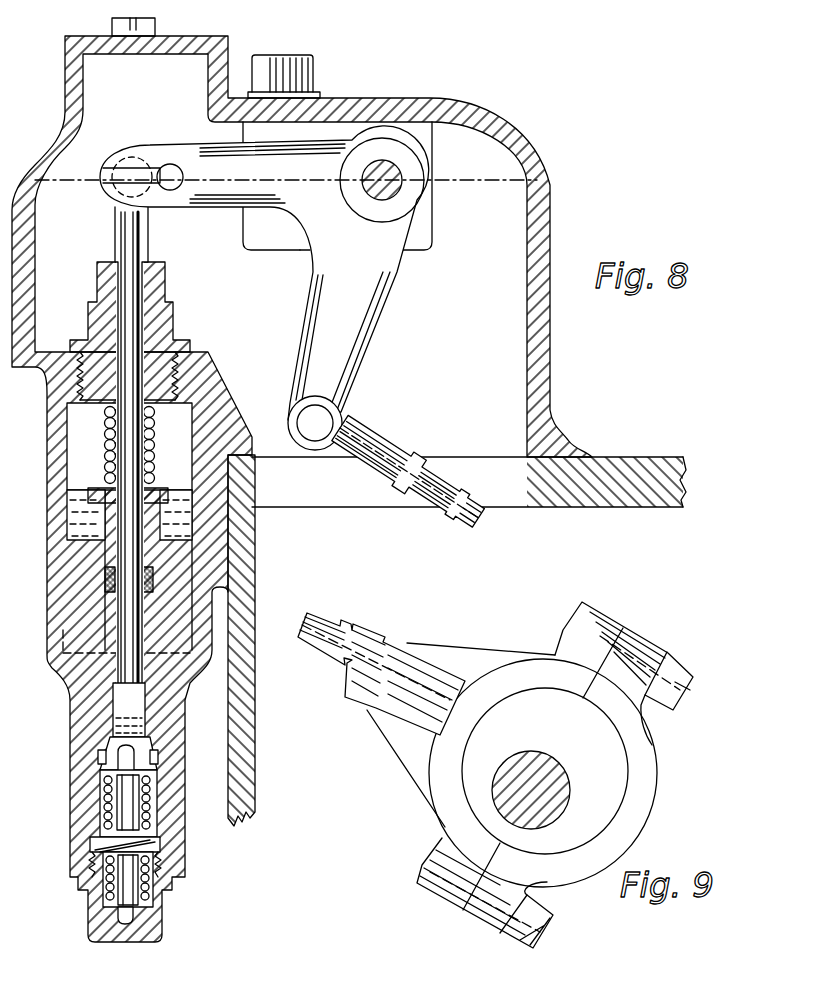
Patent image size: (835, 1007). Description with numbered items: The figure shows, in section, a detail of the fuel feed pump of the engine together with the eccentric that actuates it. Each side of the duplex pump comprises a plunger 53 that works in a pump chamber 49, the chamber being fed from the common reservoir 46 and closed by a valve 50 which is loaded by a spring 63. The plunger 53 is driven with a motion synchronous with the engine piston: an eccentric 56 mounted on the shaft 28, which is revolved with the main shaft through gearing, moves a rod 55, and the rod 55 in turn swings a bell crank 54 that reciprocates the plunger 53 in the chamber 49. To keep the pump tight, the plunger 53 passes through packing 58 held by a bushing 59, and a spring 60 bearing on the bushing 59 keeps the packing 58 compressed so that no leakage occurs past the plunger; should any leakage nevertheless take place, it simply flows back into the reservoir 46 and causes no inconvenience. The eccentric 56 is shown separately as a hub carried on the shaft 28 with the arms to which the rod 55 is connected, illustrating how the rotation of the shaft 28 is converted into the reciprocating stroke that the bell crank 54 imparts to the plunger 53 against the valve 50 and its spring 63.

In FIG. 9, the shaft 28 is at (508, 805).
In FIG. 8, the reservoir 46 is at (151, 439).
In FIG. 8, the pump chamber 49 is at (118, 722).
In FIG. 8, the valve 50 is at (107, 750).
In FIG. 8, the plunger 53 is at (130, 613).
In FIG. 8, the bell crank 54 is at (342, 320).
In FIG. 8, the rod 55 is at (460, 518).
In FIG. 9, the rod 55 is at (320, 633).
In FIG. 9, the eccentric 56 is at (519, 727).
In FIG. 8, the packing 58 is at (107, 587).
In FIG. 8, the bushing 59 is at (113, 527).
In FIG. 8, the spring 60 is at (110, 447).
In FIG. 8, the spring 63 is at (143, 853).